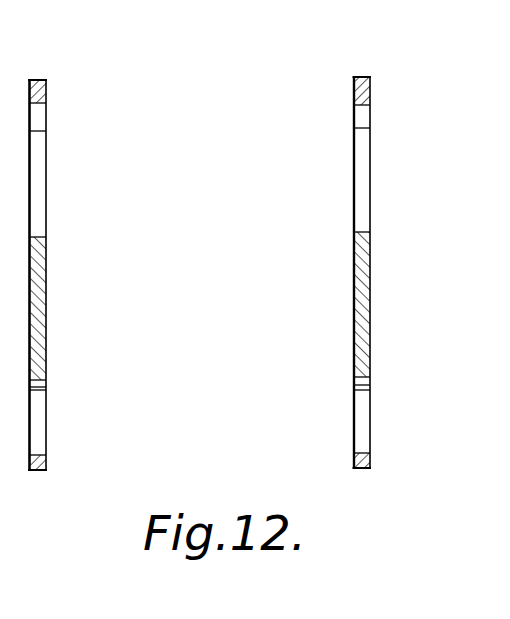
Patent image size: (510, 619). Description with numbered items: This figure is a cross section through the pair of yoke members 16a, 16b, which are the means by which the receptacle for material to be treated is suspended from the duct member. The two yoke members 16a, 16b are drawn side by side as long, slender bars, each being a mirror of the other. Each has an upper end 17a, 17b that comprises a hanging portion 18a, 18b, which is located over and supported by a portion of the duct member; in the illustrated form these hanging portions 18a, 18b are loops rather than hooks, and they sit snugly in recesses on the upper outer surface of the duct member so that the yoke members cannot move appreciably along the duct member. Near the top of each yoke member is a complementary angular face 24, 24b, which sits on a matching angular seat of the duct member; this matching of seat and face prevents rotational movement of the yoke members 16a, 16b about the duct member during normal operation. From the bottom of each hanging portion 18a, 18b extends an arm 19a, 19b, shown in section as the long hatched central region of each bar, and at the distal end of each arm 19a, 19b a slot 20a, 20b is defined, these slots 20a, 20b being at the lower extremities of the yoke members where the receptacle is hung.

The yoke member 16a is at (57, 278).
The yoke member 16b is at (346, 275).
The upper end 17a is at (54, 177).
The upper end 17b is at (327, 184).
The hanging portion 18a is at (40, 79).
The hanging portion 18b is at (358, 77).
The arm 19a is at (38, 345).
The arm 19b is at (354, 322).
The slot 20a is at (38, 420).
The slot 20b is at (360, 419).
The angular face 24 is at (38, 118).
The angular face 24b is at (364, 113).